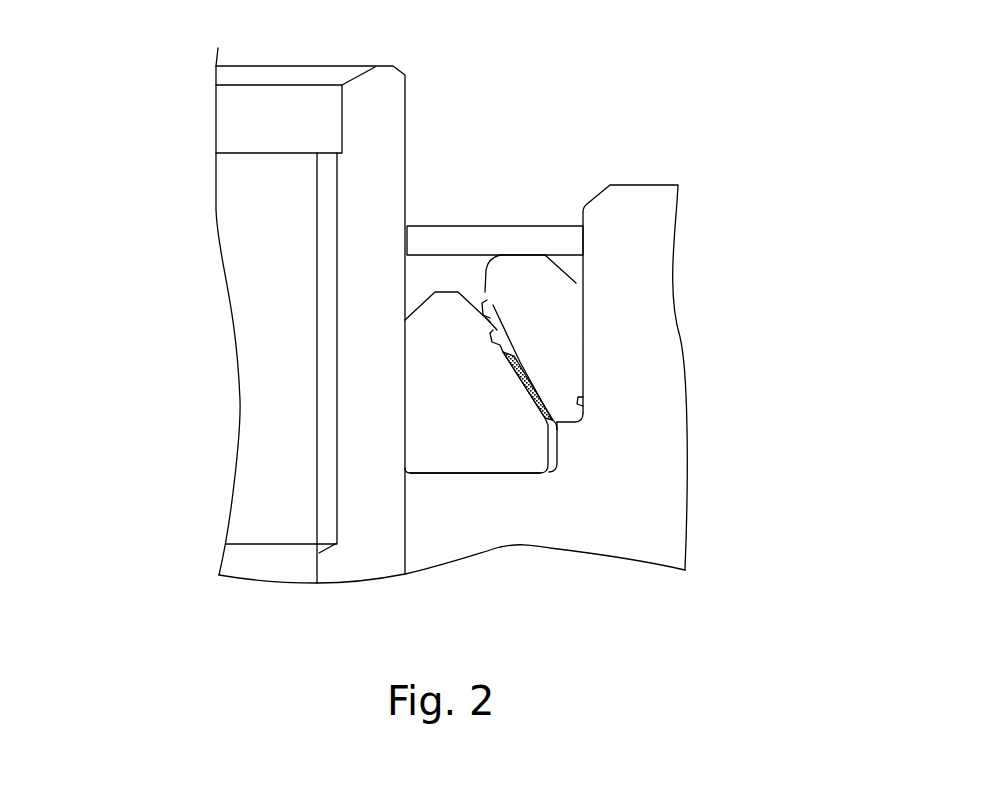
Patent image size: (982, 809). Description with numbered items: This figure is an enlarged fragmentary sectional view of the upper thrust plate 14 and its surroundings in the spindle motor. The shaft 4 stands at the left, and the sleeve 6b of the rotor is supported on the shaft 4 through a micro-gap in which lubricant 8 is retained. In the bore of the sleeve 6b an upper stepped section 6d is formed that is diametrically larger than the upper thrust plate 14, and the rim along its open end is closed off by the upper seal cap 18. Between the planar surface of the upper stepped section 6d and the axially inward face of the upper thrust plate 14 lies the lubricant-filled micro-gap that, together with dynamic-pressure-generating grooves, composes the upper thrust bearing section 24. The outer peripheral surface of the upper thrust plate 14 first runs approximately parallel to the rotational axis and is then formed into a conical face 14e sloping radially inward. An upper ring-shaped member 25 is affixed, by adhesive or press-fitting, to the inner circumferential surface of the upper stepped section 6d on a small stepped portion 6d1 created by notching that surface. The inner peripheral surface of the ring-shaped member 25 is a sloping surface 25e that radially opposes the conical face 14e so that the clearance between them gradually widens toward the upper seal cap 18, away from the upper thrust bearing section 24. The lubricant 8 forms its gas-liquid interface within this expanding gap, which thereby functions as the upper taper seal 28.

The shaft 4 is at (237, 183).
The upper seal cap 18 is at (465, 240).
The sleeve 6b is at (630, 227).
The upper stepped section 6d is at (557, 448).
The small stepped portion 6d1 is at (585, 400).
The upper ring-shaped member 25 is at (557, 330).
The engagement protrusion of rail 25e is at (493, 305).
The upper taper seal 28 is at (488, 320).
The upper thrust plate 14 is at (437, 418).
The sloped surface of support member 14e is at (495, 335).
The lubricant 8 is at (525, 367).
The upper thrust bearing section 24 is at (470, 473).